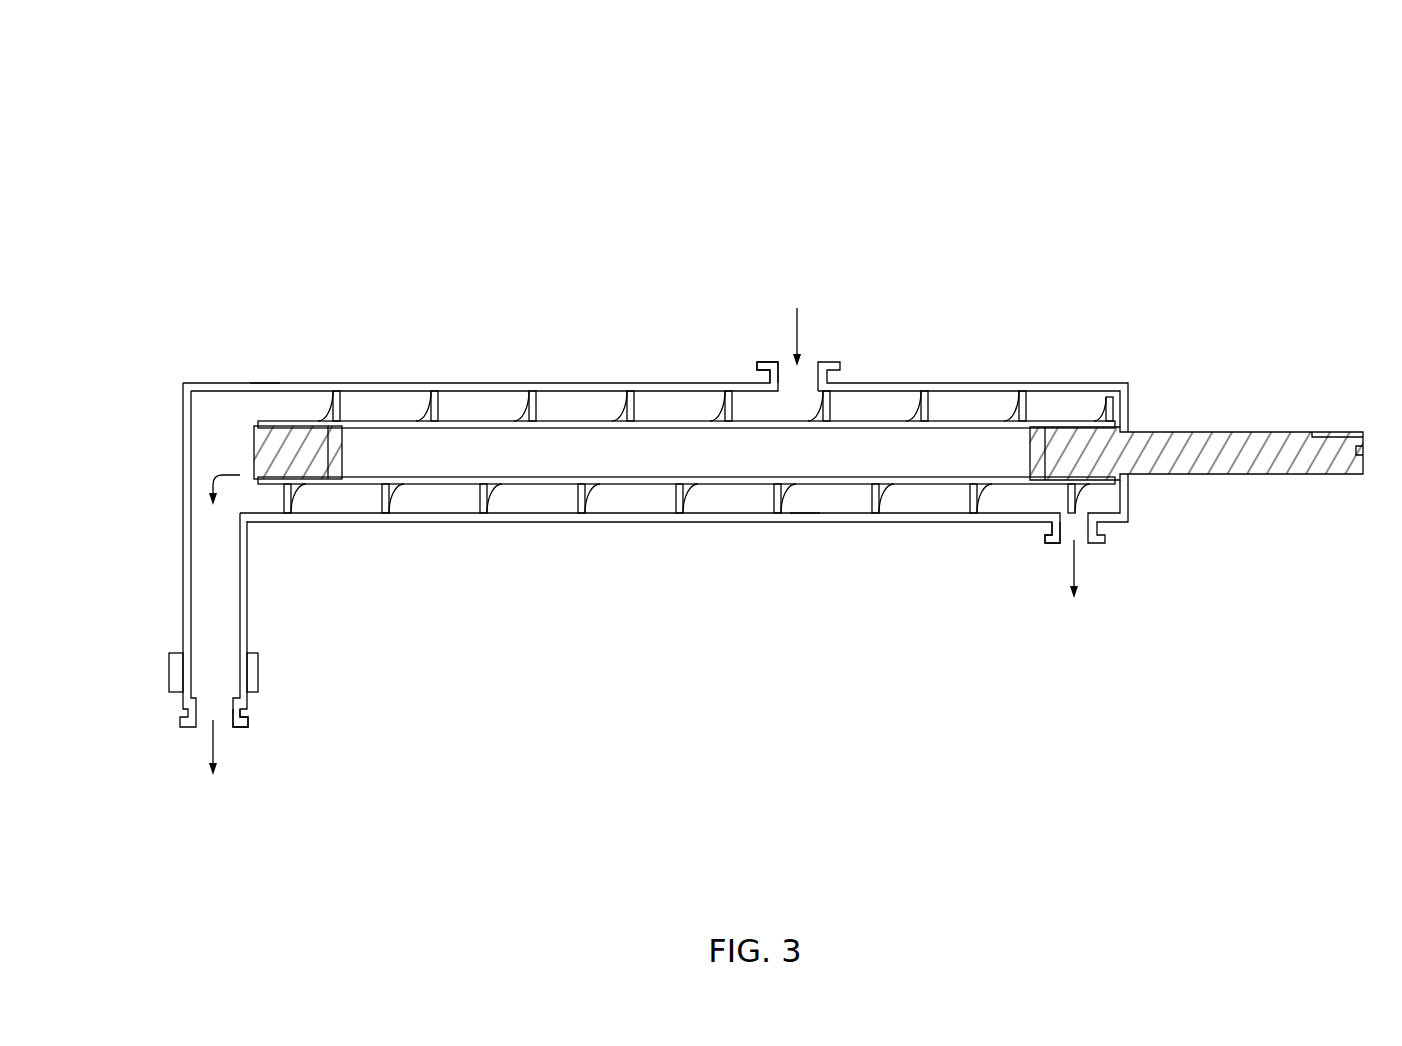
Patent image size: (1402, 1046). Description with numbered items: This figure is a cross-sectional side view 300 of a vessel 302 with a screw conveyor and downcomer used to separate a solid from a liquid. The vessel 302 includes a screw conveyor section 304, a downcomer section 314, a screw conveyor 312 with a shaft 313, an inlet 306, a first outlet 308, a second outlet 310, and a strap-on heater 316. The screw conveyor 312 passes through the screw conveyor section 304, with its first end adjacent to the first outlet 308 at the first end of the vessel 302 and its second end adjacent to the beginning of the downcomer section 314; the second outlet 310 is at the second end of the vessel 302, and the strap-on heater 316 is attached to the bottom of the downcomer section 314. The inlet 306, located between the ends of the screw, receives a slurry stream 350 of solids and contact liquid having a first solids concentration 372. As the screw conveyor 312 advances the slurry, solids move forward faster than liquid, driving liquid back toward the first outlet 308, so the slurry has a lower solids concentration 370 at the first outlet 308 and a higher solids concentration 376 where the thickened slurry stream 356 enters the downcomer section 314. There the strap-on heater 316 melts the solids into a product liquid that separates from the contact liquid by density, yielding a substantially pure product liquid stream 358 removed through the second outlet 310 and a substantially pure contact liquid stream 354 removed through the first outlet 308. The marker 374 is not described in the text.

The cross-sectional side view 300 is at (221, 93).
The vessel 302 is at (200, 383).
The screw conveyor section 304 is at (482, 383).
The inlet 306 is at (838, 362).
The first outlet 308 is at (1107, 543).
The second outlet 310 is at (182, 727).
The screw conveyor 312 is at (775, 522).
The shaft 313 is at (1275, 430).
The downcomer section 314 is at (248, 583).
The strap-on heater 316 is at (258, 648).
The slurry stream 350 is at (797, 323).
The contact liquid stream 354 is at (1074, 585).
The thickened slurry stream 356 is at (216, 504).
The product liquid stream 358 is at (216, 764).
The lower solids concentration 370 is at (1045, 543).
The first solids concentration 372 is at (757, 359).
The seam 374 is at (263, 380).
The higher solids concentration 376 is at (252, 727).